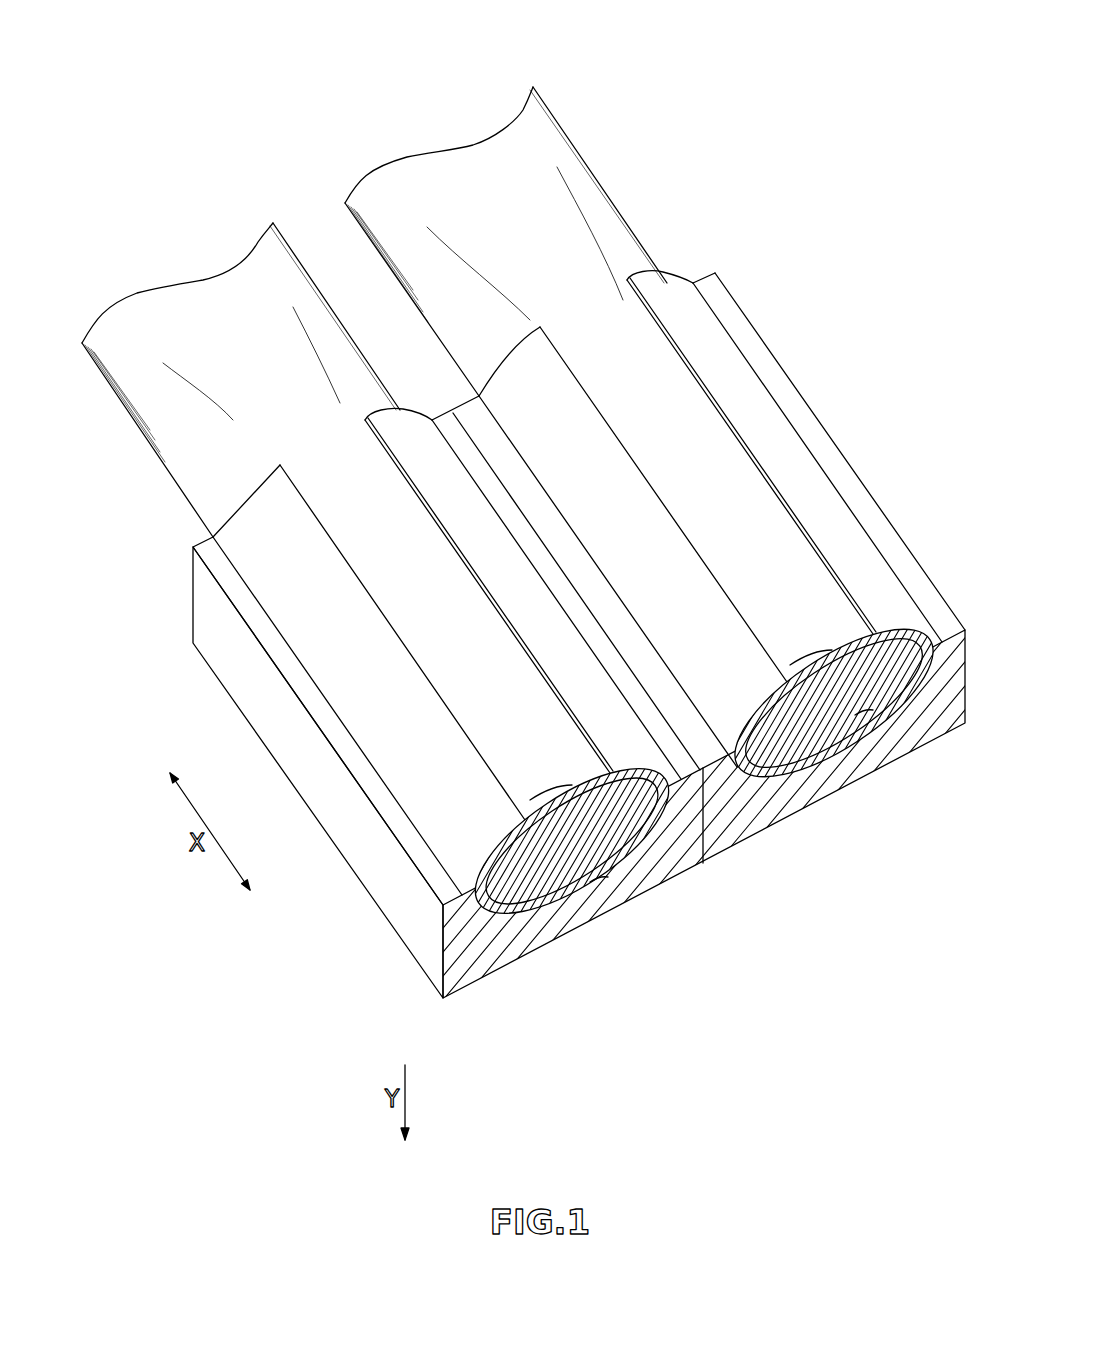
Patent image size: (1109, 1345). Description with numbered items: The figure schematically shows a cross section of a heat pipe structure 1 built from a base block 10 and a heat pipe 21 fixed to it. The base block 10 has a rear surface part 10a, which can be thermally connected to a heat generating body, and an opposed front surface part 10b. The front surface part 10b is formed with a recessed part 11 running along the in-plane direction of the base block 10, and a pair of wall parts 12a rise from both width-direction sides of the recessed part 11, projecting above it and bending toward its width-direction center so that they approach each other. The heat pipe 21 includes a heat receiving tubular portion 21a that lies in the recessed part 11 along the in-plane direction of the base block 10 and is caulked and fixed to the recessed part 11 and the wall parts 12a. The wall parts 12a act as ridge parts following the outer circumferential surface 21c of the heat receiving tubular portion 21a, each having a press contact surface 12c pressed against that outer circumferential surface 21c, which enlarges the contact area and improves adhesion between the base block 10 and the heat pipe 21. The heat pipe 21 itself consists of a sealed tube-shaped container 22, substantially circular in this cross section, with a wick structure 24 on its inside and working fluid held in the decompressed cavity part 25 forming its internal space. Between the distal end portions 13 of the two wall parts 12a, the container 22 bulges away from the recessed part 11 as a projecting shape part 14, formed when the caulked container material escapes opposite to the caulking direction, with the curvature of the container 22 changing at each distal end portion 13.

The heat pipe structure 1 is at (787, 102).
The base block 10 is at (373, 860).
The rear surface part 10a is at (495, 975).
The front surface part 10b is at (437, 887).
The recessed part 11 is at (571, 900).
The wall part 12a is at (853, 557).
The press contact surface 12c is at (533, 905).
The distal end portion 13 is at (643, 323).
The projecting shape part 14 is at (822, 648).
The heat pipe 21 is at (603, 183).
The heat receiving tubular portion 21a is at (665, 437).
The outer circumferential surface 21c is at (905, 650).
The container 22 is at (578, 150).
The wick structure 24 is at (630, 855).
The cavity part 25 is at (593, 880).